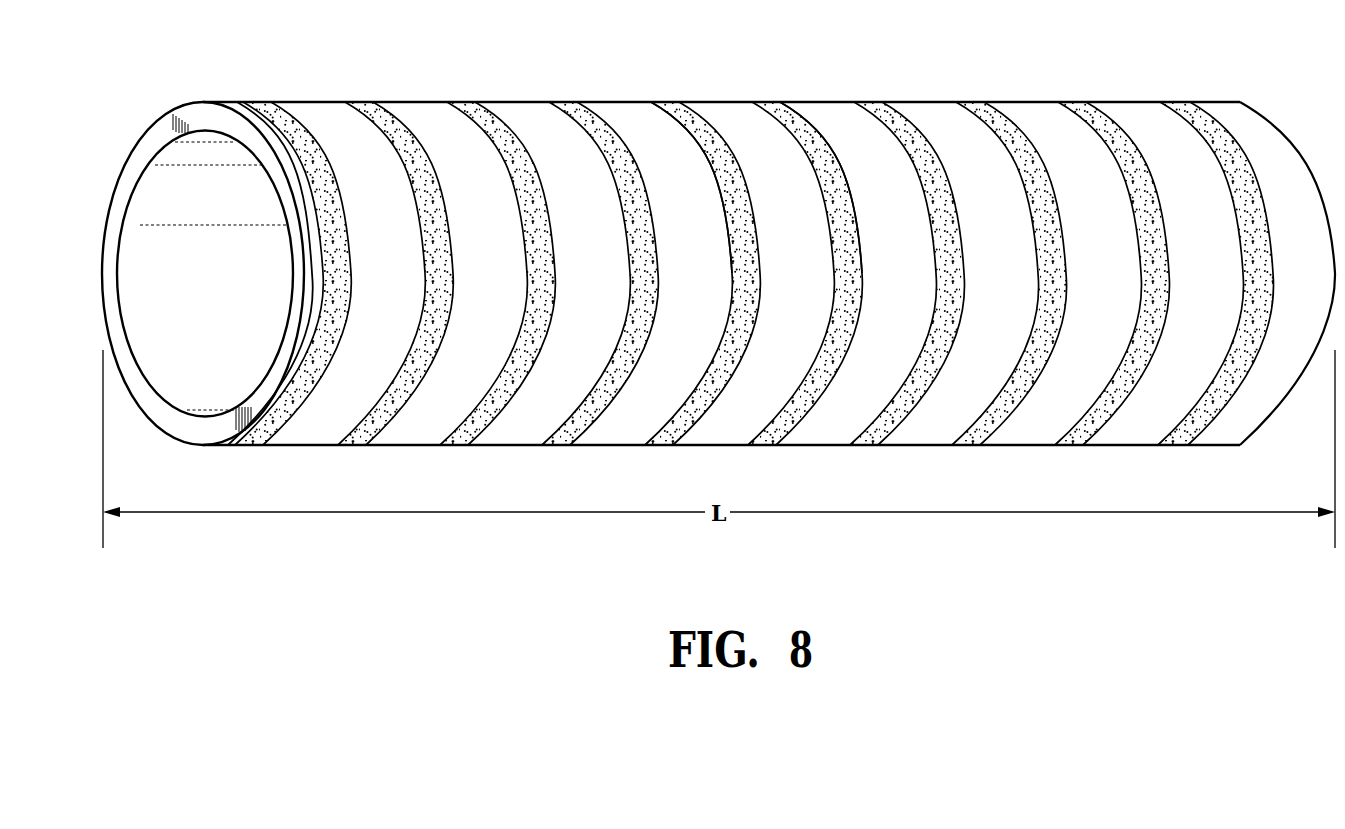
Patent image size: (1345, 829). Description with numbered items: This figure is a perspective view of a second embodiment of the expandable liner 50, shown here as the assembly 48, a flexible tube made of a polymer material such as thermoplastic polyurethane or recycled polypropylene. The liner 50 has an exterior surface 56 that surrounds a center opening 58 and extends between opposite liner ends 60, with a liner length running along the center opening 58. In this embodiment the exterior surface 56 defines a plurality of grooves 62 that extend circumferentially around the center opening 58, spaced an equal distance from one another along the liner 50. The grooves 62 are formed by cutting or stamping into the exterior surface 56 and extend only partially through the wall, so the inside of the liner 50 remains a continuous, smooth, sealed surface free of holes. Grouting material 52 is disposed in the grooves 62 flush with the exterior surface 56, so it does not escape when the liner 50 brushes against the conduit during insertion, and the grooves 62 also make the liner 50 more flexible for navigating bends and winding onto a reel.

The shaft assembly 48 is at (718, 234).
The tubular body 50 is at (718, 234).
The helical bands of first material 52 is at (466, 110).
The helical band of second material 56 is at (318, 117).
The central bore 58 is at (221, 285).
The end of tubular body 60 is at (218, 102).
The interface between bands 62 is at (872, 125).